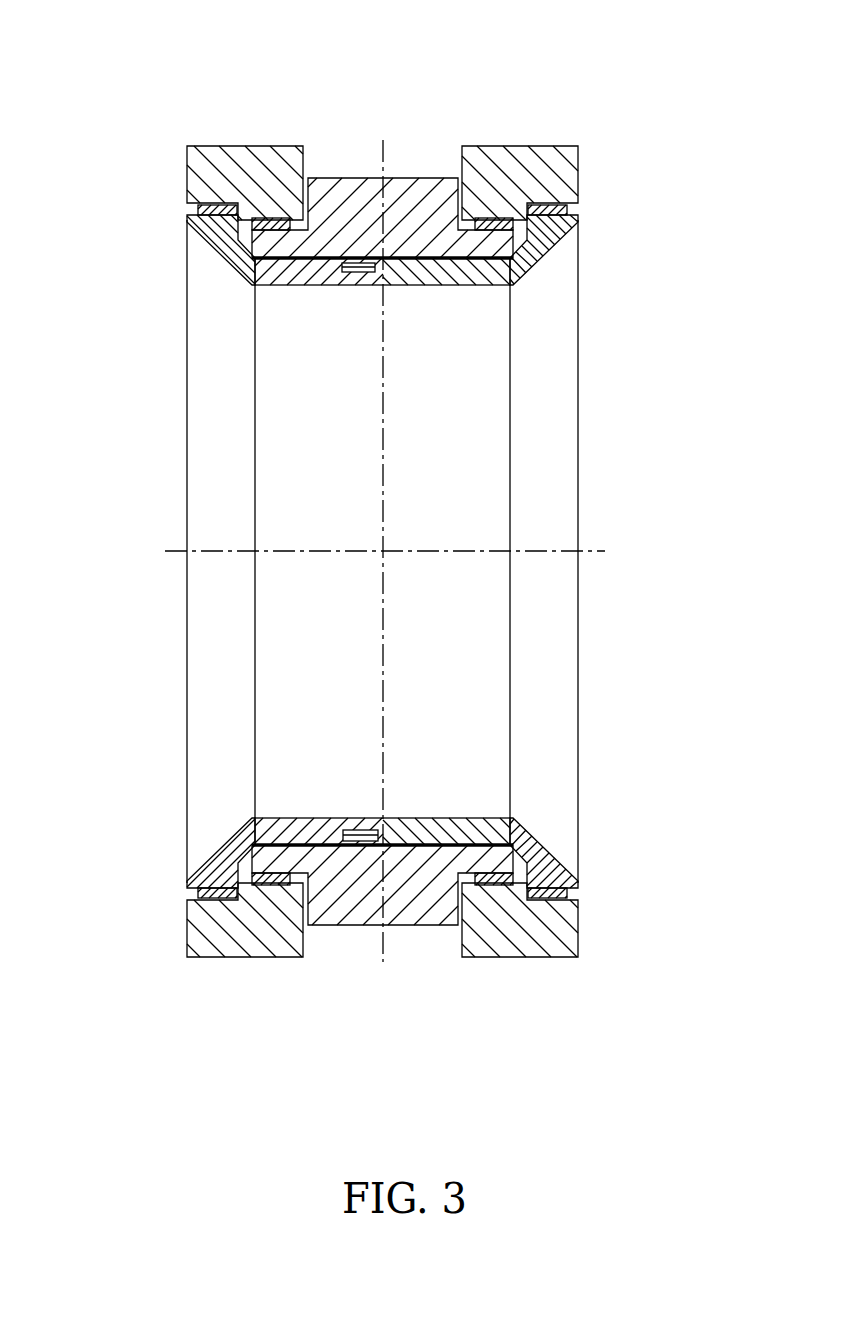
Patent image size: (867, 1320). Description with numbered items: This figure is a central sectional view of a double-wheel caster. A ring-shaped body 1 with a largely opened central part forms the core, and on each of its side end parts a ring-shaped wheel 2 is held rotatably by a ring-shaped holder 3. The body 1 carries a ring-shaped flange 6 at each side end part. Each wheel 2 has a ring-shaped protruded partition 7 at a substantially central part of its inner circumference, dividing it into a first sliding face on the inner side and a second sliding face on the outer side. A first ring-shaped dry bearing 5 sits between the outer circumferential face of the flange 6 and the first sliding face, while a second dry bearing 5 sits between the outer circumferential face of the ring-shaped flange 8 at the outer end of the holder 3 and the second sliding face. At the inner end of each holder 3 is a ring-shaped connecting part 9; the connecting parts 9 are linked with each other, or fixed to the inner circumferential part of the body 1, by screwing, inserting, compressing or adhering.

The ring-shaped body 1 is at (350, 177).
The ring-shaped wheel 2 is at (247, 146).
The ring-shaped holder 3 is at (225, 256).
The ring-shaped dry bearing 5 is at (262, 218).
The ring-shaped flange 6 is at (252, 285).
The ring-shaped protruded partition 7 is at (232, 848).
The ring-shaped flange 8 is at (222, 887).
The ring-shaped connecting part 9 is at (358, 274).